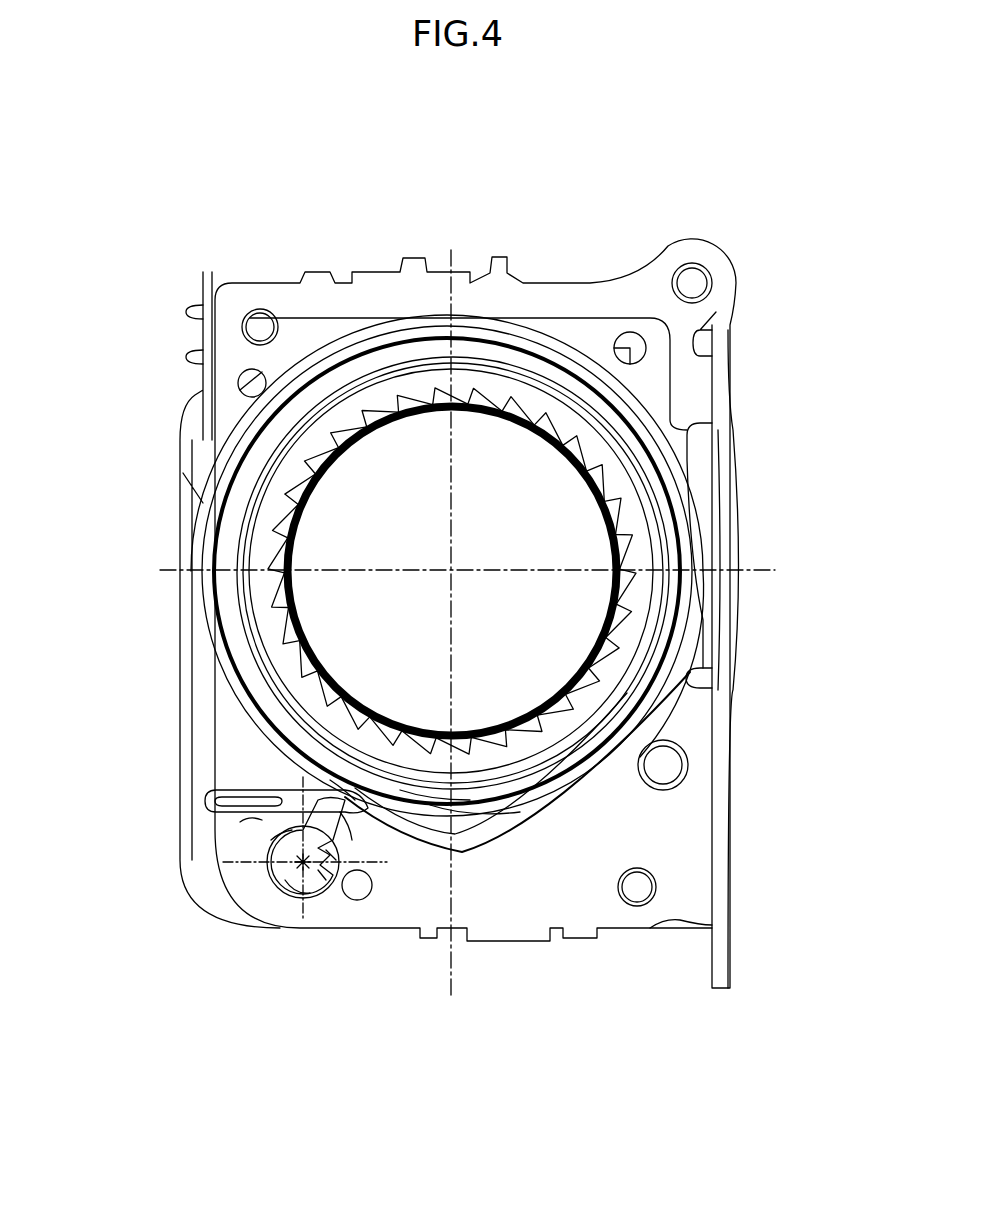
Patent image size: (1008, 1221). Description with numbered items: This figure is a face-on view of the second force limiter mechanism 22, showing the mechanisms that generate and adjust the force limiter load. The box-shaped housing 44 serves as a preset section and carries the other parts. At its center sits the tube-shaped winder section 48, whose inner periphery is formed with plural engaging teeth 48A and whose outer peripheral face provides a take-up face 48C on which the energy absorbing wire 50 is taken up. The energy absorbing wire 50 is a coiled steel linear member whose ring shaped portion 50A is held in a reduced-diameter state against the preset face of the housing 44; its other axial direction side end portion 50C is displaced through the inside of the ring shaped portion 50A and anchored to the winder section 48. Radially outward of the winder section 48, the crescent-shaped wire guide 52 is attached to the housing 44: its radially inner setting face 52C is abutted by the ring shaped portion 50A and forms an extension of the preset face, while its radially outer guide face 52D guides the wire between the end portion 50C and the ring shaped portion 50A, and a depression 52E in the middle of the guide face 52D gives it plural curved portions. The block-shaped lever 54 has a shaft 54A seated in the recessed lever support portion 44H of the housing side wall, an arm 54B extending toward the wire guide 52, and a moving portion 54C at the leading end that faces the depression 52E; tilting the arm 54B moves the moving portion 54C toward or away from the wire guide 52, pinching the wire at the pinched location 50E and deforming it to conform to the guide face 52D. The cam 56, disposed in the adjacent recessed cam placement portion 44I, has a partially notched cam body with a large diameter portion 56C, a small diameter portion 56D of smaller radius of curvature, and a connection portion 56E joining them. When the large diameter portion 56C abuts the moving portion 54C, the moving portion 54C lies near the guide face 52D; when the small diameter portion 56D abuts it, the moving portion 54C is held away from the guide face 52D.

The second force limiter mechanism 22 is at (522, 208).
The housing 44 is at (586, 274).
The lever support portion 44H is at (258, 822).
The cam placement portion 44I is at (270, 896).
The winder section 48 is at (372, 392).
The engaging teeth 48A is at (332, 470).
The take-up face 48C is at (262, 503).
The energy absorbing wire 50 is at (236, 437).
The ring shaped portion 50A is at (222, 612).
The another axial direction side end portion 50C is at (665, 552).
The pinched location 50E is at (425, 800).
The wire guide 52 is at (482, 815).
The setting face 52C is at (440, 805).
The guide face 52D is at (408, 790).
The depression 52E is at (338, 785).
The lever 54 is at (270, 830).
The shaft 54A is at (232, 798).
The arm 54B is at (285, 845).
The moving portion 54C is at (347, 840).
The cam 56 is at (303, 885).
The large diameter portion 56C is at (298, 892).
The small diameter portion 56D is at (322, 880).
The connection portion 56E is at (332, 862).